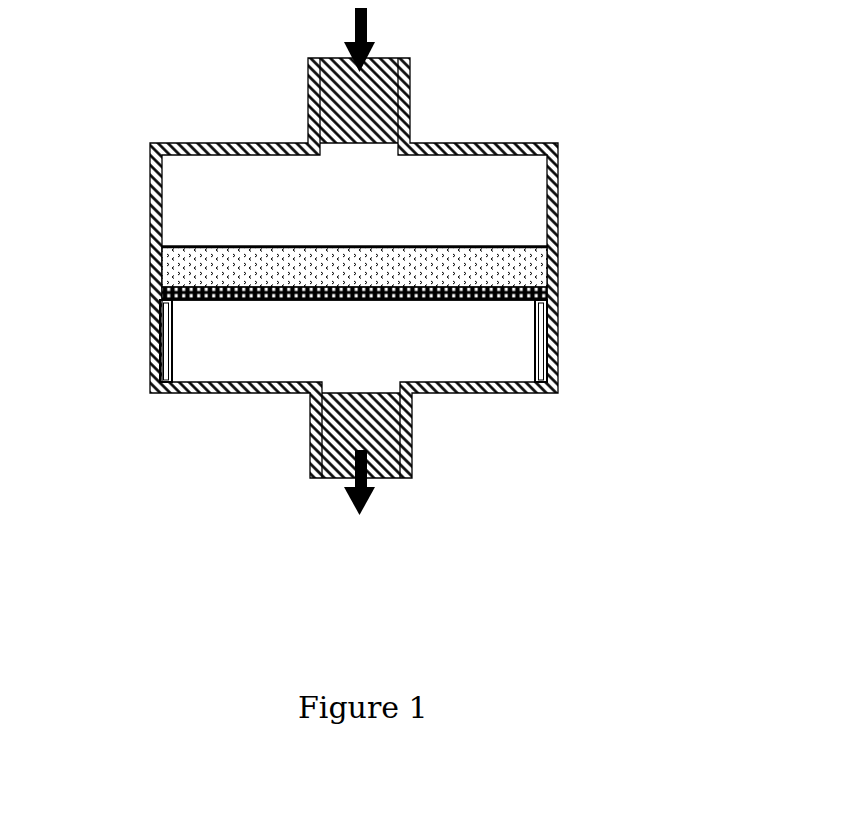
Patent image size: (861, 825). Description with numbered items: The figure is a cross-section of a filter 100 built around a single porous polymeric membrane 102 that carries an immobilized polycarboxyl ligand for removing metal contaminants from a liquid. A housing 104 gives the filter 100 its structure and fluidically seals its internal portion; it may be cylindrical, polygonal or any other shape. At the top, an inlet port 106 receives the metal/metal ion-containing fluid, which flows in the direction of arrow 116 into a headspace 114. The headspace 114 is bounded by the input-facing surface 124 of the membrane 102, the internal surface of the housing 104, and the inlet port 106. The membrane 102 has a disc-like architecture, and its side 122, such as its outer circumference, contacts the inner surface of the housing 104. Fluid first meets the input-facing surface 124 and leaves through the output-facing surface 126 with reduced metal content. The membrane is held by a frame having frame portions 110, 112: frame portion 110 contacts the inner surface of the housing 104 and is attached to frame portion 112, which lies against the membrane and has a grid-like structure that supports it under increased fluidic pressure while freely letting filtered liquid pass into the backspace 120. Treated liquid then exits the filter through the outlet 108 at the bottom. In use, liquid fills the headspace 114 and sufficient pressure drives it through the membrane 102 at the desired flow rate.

The filter 100 is at (540, 95).
The porous polymeric membrane 102 is at (520, 277).
The housing 104 is at (152, 186).
The inlet port 106 is at (372, 97).
The outlet 108 is at (345, 408).
The frame portion 110 is at (165, 372).
The frame portion 112 is at (478, 300).
The headspace 114 is at (240, 207).
The arrow 116 is at (338, 40).
The backspace 120 is at (427, 356).
The side 122 is at (553, 252).
The input-facing surface 124 is at (463, 245).
The output-facing surface 126 is at (268, 298).